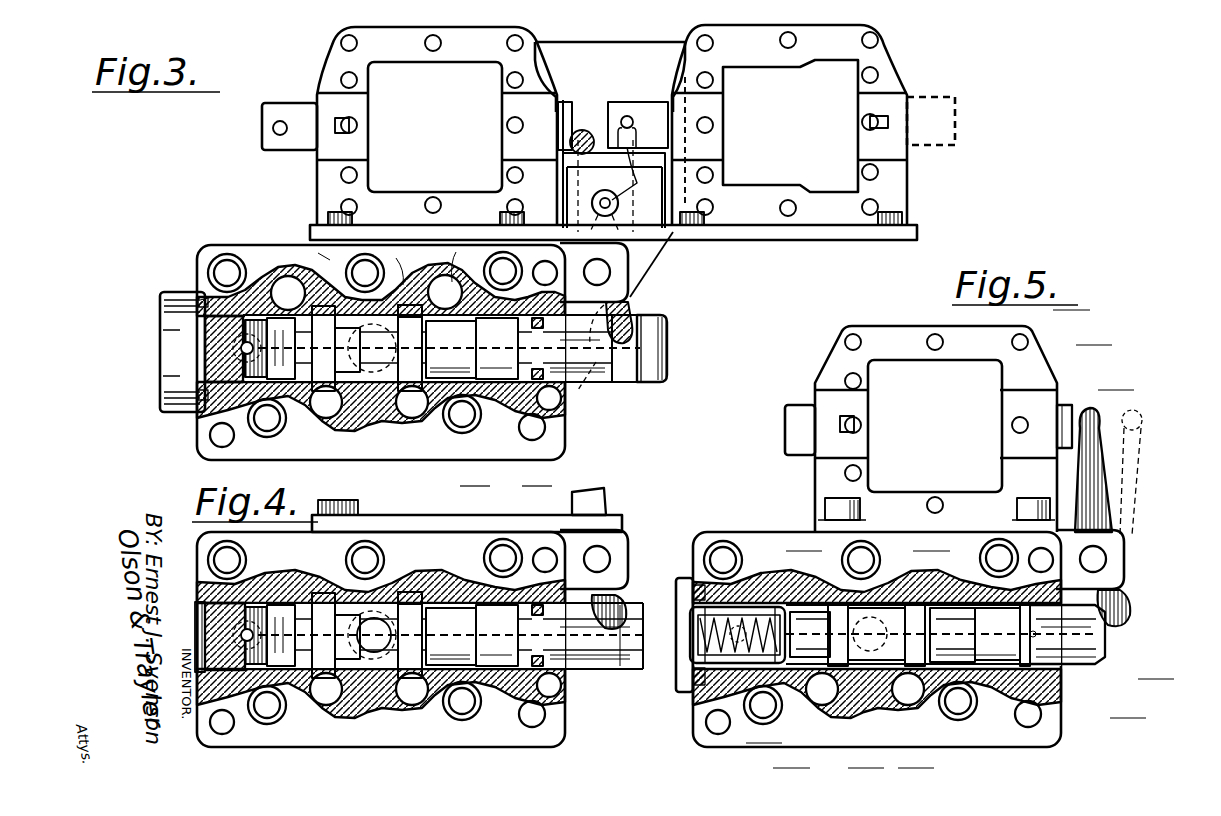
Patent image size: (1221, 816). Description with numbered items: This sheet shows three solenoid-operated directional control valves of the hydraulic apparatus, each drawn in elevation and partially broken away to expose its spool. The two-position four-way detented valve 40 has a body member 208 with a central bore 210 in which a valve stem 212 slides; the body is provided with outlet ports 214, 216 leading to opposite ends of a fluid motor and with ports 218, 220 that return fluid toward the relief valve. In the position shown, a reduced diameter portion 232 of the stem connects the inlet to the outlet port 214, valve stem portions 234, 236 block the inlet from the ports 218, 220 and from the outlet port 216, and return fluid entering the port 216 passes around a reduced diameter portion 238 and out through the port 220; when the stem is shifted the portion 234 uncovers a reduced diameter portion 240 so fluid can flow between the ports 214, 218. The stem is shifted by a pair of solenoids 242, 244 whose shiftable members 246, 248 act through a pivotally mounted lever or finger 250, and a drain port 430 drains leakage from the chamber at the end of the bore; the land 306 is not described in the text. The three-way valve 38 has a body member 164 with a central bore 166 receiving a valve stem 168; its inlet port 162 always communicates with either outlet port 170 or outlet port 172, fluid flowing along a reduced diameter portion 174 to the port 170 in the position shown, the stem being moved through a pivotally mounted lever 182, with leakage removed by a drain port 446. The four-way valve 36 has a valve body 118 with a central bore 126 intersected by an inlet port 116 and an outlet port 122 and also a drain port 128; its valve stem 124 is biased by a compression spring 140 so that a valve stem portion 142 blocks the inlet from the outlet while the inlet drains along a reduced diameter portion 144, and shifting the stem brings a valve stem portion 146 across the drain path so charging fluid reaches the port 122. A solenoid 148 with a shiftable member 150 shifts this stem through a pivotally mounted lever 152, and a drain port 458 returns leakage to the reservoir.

In FIG. 3, the valve 40 is at (652, 286).
In FIG. 5, the valve 36 is at (735, 524).
In FIG. 4, the valve 38 is at (580, 508).
In FIG. 3, the body member 208 is at (566, 422).
In FIG. 3, the central bore 210 is at (318, 253).
In FIG. 3, the valve stem 212 is at (652, 342).
In FIG. 3, the outlet port 214 is at (468, 424).
In FIG. 3, the outlet port 216 is at (332, 420).
In FIG. 3, the port 218 is at (456, 252).
In FIG. 3, the port 220 is at (222, 250).
In FIG. 3, the reduced diameter portion 232 is at (362, 396).
In FIG. 3, the valve stem portion 234 is at (404, 252).
In FIG. 3, the valve stem portion 236 is at (328, 285).
In FIG. 3, the reduced diameter portion 238 is at (232, 412).
In FIG. 3, the reduced diameter portion 240 is at (536, 428).
In FIG. 3, the solenoid 242 is at (537, 67).
In FIG. 3, the solenoid 244 is at (677, 68).
In FIG. 3, the shiftable member 246 is at (563, 102).
In FIG. 3, the shiftable member 248 is at (637, 100).
In FIG. 3, the lever or finger 250 is at (613, 187).
In FIG. 3, the spool land 306 is at (445, 424).
In FIG. 3, the drain port 430 is at (243, 350).
In FIG. 4, the drain port 446 is at (256, 625).
In FIG. 4, the inlet port 162 is at (382, 660).
In FIG. 4, the body member 164 is at (560, 726).
In FIG. 4, the central bore 166 is at (448, 605).
In FIG. 4, the valve stem 168 is at (500, 612).
In FIG. 4, the outlet port 170 is at (442, 700).
In FIG. 4, the outlet port 172 is at (325, 706).
In FIG. 4, the reduced diameter portion 174 is at (368, 715).
In FIG. 4, the lever 182 is at (616, 596).
In FIG. 5, the inlet port 116 is at (862, 662).
In FIG. 5, the valve body 118 is at (1045, 702).
In FIG. 5, the outlet port 122 is at (815, 700).
In FIG. 5, the valve stem 124 is at (1072, 668).
In FIG. 5, the central bore 126 is at (850, 600).
In FIG. 5, the drain port 128 is at (955, 726).
In FIG. 5, the compression spring 140 is at (688, 652).
In FIG. 5, the valve stem portion 142 is at (855, 662).
In FIG. 5, the reduced diameter portion 144 is at (886, 662).
In FIG. 5, the valve stem portion 146 is at (905, 610).
In FIG. 5, the solenoid 148 is at (1032, 360).
In FIG. 5, the shiftable member 150 is at (1066, 410).
In FIG. 5, the lever 152 is at (1092, 448).
In FIG. 5, the drain port 458 is at (746, 625).